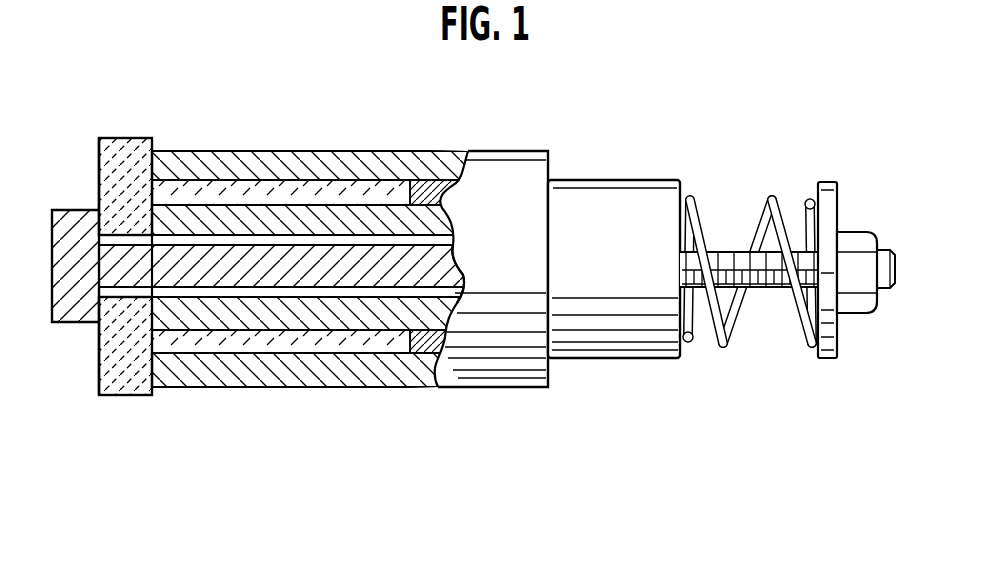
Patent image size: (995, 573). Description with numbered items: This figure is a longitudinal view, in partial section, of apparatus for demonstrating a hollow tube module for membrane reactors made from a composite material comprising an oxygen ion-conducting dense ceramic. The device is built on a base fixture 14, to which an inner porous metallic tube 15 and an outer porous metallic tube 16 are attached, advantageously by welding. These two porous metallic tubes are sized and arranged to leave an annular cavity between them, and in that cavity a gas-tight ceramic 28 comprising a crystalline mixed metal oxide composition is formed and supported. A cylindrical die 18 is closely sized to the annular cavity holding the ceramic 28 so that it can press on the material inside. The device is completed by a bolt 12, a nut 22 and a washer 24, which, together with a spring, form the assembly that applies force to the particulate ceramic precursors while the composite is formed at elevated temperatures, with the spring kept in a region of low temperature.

The bolt 12 is at (75, 210).
The base fixture 14 is at (130, 138).
The inner porous metallic tube 15 is at (458, 223).
The outer porous metallic tube 16 is at (270, 150).
The cylindrical die 18 is at (441, 185).
The nut 22 is at (858, 232).
The washer 24 is at (828, 182).
The gas-tight ceramic 28 is at (357, 192).